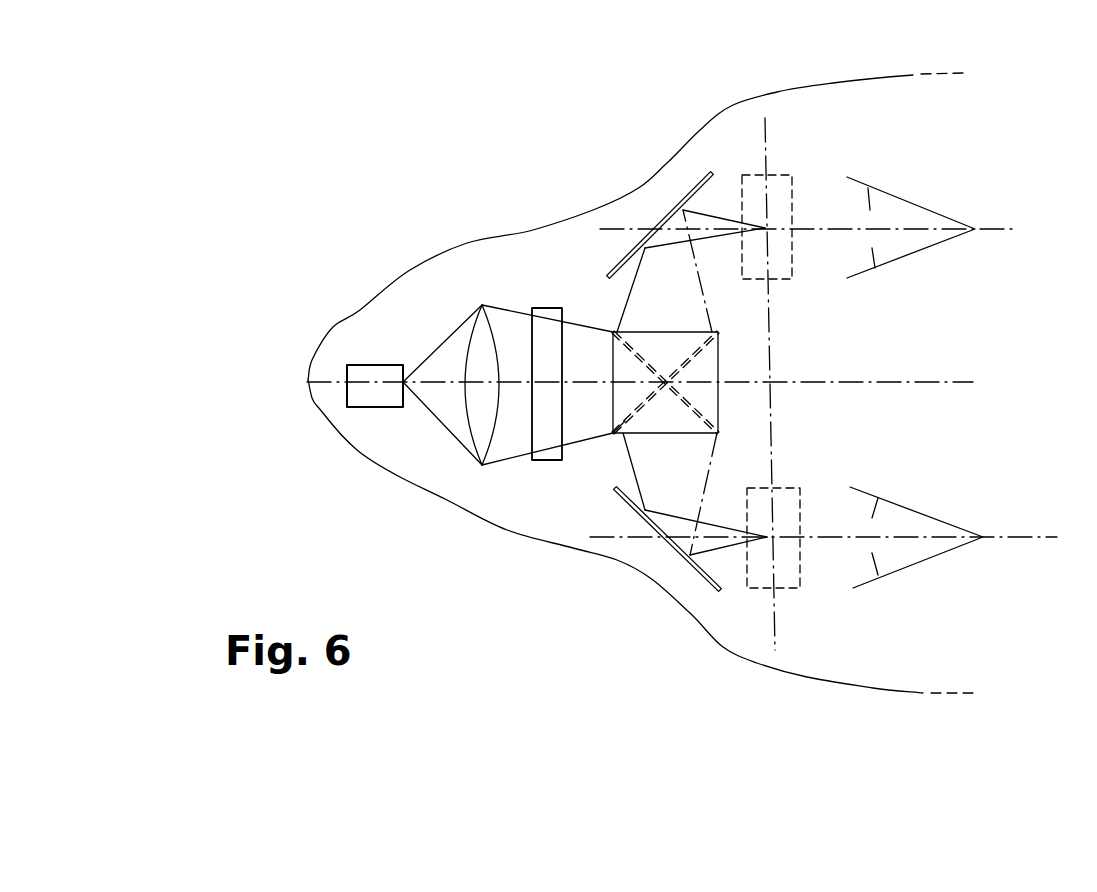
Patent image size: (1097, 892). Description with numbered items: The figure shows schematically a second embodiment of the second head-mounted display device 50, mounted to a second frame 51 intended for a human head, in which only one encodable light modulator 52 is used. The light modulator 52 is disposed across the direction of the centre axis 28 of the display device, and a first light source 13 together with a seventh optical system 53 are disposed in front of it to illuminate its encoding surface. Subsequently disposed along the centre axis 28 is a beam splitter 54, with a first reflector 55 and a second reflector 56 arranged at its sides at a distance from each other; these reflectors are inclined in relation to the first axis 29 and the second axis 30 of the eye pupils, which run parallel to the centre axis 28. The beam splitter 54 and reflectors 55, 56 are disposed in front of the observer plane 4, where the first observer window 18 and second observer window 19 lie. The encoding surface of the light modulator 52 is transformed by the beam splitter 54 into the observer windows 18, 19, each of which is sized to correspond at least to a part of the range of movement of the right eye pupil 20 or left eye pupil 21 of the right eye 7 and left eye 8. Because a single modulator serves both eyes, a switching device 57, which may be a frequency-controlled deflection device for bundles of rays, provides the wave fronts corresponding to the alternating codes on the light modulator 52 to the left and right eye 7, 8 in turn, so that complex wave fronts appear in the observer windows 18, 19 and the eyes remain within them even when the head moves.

The second display device 50 is at (450, 132).
The second frame 51 is at (788, 92).
The observer plane 4 is at (768, 137).
The first light source 13 is at (385, 398).
The seventh optical system 53 is at (480, 313).
The light modulator 52 is at (547, 308).
The beam splitter 54 is at (718, 350).
The switching device 57 is at (618, 432).
The first reflector 55 is at (707, 172).
The second reflector 56 is at (628, 502).
The first observer window 18 is at (790, 280).
The second observer window 19 is at (800, 483).
The right eye pupil 20 is at (868, 225).
The left eye pupil 21 is at (872, 528).
The right eye 7 is at (933, 203).
The left eye 8 is at (947, 522).
The centre axis of the display device 28 is at (945, 381).
The first axis of an eye pupil 29 is at (1013, 229).
The second axis of an eye pupil 30 is at (1048, 538).